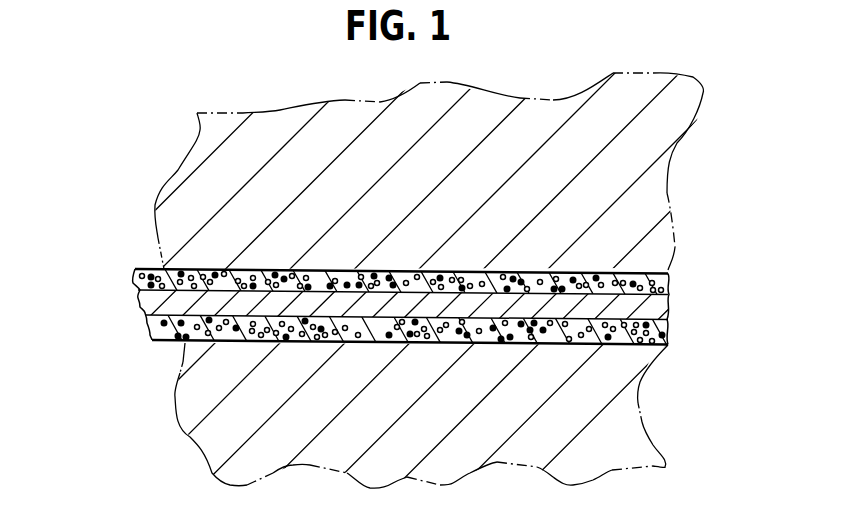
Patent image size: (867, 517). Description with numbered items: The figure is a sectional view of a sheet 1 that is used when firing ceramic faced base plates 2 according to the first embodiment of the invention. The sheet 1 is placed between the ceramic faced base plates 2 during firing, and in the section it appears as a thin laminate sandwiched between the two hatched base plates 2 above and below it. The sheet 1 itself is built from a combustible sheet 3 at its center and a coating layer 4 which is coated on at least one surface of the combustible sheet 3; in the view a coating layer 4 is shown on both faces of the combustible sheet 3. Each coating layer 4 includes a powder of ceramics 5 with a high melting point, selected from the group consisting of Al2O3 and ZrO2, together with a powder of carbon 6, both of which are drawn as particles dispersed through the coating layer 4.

The sheet 1 is at (141, 303).
The ceramic faced base plates 2 is at (178, 170).
The combustible sheet 3 is at (657, 308).
The coating layer 4 is at (668, 278).
The powder of ceramics 5 is at (393, 275).
The powder of carbon 6 is at (442, 280).